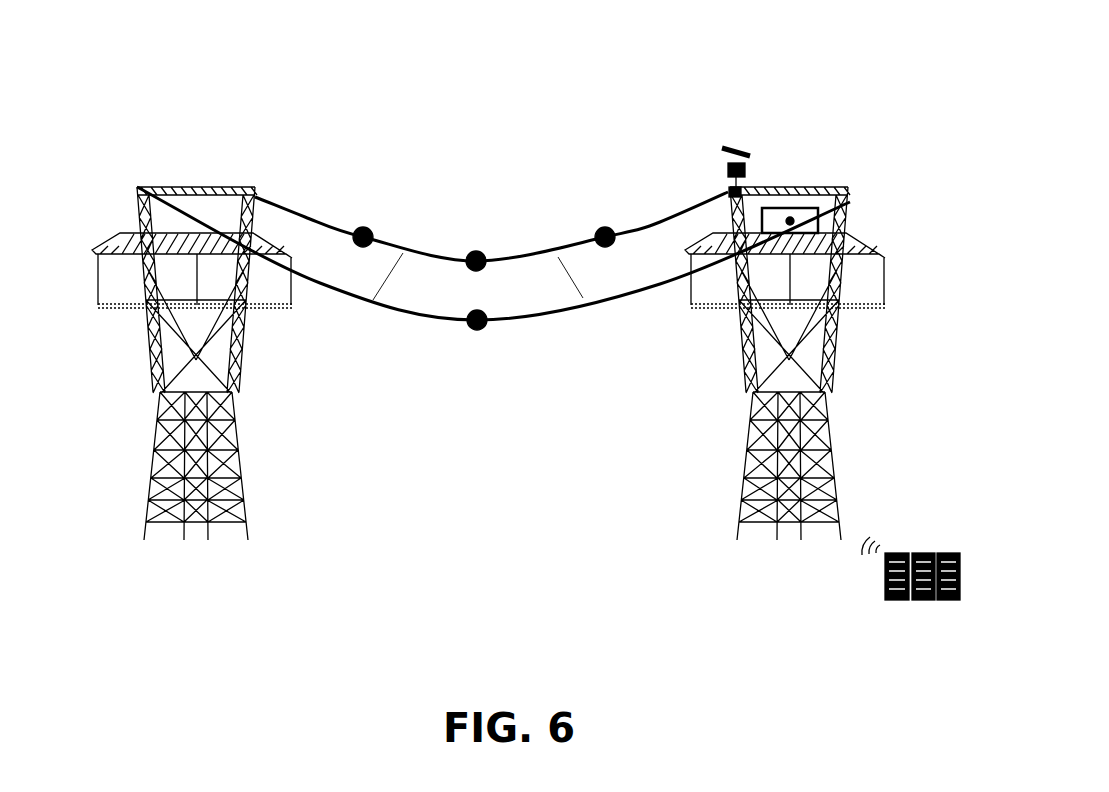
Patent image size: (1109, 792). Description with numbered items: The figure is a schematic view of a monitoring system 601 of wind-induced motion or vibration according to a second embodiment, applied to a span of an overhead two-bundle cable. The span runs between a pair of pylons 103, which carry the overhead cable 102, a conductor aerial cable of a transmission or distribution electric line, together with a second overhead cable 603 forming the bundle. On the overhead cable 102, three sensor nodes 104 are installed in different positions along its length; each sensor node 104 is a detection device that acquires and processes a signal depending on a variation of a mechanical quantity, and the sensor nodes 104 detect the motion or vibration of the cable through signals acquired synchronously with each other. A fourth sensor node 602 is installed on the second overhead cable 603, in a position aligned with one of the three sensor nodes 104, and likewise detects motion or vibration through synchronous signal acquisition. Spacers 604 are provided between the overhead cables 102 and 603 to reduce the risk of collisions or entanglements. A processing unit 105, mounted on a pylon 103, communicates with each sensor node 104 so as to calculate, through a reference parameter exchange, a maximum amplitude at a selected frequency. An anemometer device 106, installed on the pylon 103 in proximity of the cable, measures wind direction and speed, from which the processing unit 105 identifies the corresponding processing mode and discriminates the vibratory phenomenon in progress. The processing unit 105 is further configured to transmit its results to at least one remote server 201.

The overhead cable 102 is at (305, 217).
The pylon 103 is at (183, 523).
The sensor node 104 is at (365, 232).
The processing unit 105 is at (787, 197).
The anemometer device 106 is at (720, 150).
The remote server 201 is at (940, 605).
The monitoring system 601 is at (859, 162).
The fourth sensor node 602 is at (480, 315).
The second overhead cable 603 is at (345, 293).
The spacer 604 is at (388, 272).